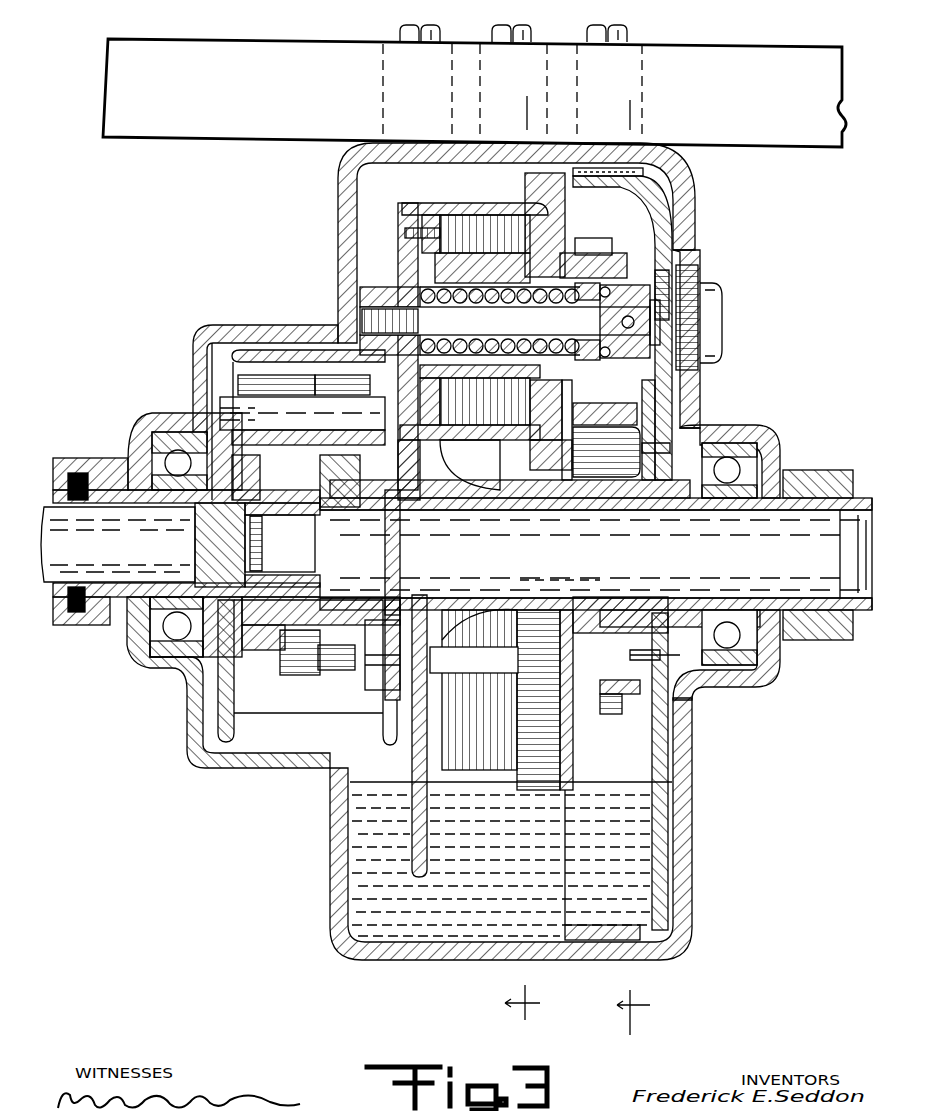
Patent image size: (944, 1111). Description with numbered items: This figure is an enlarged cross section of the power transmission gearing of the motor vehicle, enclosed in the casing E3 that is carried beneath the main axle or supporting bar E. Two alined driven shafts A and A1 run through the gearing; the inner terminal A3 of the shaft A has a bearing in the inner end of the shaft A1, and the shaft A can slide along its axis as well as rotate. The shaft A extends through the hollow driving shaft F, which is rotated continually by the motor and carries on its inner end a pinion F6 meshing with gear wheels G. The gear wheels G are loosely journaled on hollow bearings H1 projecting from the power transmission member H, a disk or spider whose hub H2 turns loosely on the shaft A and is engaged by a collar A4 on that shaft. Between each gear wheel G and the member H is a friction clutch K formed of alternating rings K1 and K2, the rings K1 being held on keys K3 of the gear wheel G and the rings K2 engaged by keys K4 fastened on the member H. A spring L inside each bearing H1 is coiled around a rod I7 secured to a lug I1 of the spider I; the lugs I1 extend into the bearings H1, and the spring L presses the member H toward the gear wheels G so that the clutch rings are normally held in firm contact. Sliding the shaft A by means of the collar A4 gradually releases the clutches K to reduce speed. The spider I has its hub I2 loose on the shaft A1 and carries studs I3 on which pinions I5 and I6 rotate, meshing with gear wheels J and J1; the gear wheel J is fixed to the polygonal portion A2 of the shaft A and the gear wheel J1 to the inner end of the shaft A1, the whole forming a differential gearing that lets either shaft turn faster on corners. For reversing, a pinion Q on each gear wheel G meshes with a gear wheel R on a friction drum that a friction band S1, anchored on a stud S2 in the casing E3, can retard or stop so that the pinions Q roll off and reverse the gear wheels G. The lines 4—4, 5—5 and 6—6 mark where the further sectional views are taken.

The main axle or supporting bar E is at (722, 46).
The casing E3 is at (340, 196).
The friction band S1 is at (610, 166).
The gear wheel R is at (633, 427).
The pinion Q is at (655, 330).
The hub of spider I2 is at (125, 470).
The hollow driving shaft F is at (812, 480).
The driven shaft A1 is at (118, 544).
The gear wheel J is at (328, 518).
The inner terminal of shaft A A3 is at (282, 545).
The polygonal portion of shaft A A2 is at (596, 554).
The collar A4 is at (556, 552).
The driven shaft A is at (822, 554).
The power transmission member H is at (398, 266).
The hub of transmission member H2 is at (450, 500).
The keys K4 is at (438, 204).
The friction clutch K is at (468, 214).
The clutch rings K2 is at (492, 214).
The clutch rings K1 is at (514, 214).
The keys K3 is at (555, 615).
The gear wheel G is at (566, 208).
The spring L is at (578, 262).
The section line 6— 6 is at (388, 262).
The rod I7 is at (510, 321).
The hollow bearings H1 is at (612, 280).
The pinion F6 is at (518, 500).
The spider I is at (290, 348).
The pinion I5 is at (258, 372).
The pinion I6 is at (343, 672).
The stud I3 is at (302, 420).
The gear wheel J1 is at (285, 468).
The lugs I1 is at (325, 377).
The stud S2 is at (607, 946).
The section line 5— 5 is at (522, 555).
The section line 4— 4 is at (633, 571).